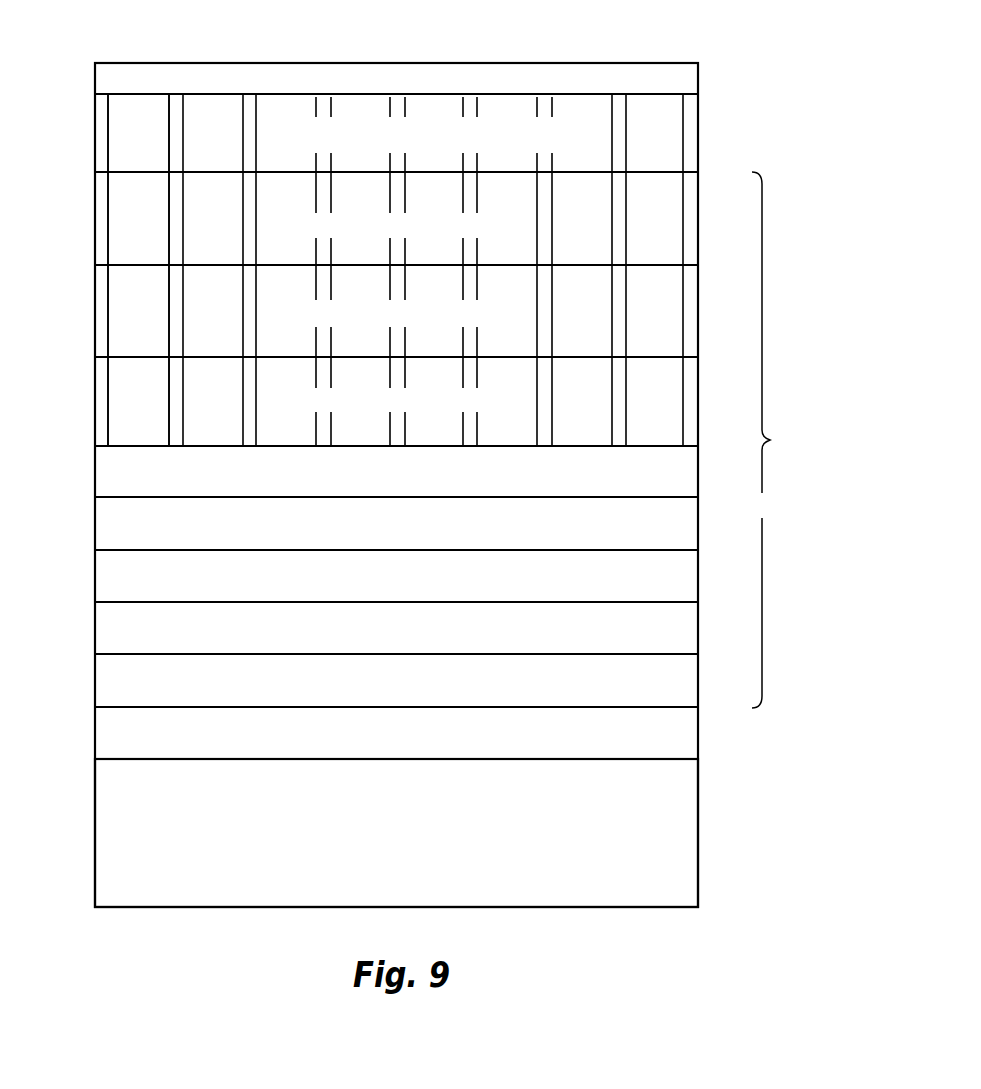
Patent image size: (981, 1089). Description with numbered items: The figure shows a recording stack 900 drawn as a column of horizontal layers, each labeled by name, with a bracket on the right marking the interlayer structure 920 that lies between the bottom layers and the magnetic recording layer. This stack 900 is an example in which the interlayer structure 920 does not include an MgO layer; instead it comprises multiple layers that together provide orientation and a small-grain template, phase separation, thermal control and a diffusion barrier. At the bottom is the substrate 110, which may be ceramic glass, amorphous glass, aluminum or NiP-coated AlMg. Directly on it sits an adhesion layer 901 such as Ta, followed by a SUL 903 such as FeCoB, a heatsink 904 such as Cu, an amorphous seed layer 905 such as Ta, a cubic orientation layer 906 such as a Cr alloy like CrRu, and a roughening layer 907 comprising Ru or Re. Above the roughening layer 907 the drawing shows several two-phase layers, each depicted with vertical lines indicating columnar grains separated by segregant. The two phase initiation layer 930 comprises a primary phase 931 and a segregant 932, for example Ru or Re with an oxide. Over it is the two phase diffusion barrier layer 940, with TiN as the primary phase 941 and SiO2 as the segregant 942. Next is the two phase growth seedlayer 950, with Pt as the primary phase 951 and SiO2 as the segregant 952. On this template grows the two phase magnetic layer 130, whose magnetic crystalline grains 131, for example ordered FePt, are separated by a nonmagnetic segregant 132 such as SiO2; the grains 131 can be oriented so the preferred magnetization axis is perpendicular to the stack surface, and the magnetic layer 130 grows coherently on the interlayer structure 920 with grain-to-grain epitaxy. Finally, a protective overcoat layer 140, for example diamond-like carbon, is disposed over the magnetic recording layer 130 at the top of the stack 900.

The stack 900 is at (351, 43).
The overcoat layer 140 is at (693, 76).
The magnetic layer 130 is at (698, 128).
The segregant 132 is at (103, 122).
The magnetic crystalline grains 131 is at (125, 123).
The two phase growth seedlayer 950 is at (698, 216).
The segregant 952 is at (103, 221).
The primary phase 951 is at (118, 224).
The two phase diffusion barrier layer 940 is at (698, 289).
The segregant 942 is at (104, 319).
The primary phase 941 is at (117, 323).
The two phase initiation layer 930 is at (698, 370).
The segregant 932 is at (104, 392).
The primary phase 931 is at (117, 396).
The roughening layer 907 is at (696, 478).
The cubic orientation layer 906 is at (696, 527).
The amorphous seed layer 905 is at (696, 581).
The heatsink 904 is at (696, 631).
The SUL 903 is at (696, 686).
The adhesion layer 901 is at (696, 739).
The substrate 110 is at (688, 843).
The interlayer structure 920 is at (809, 440).